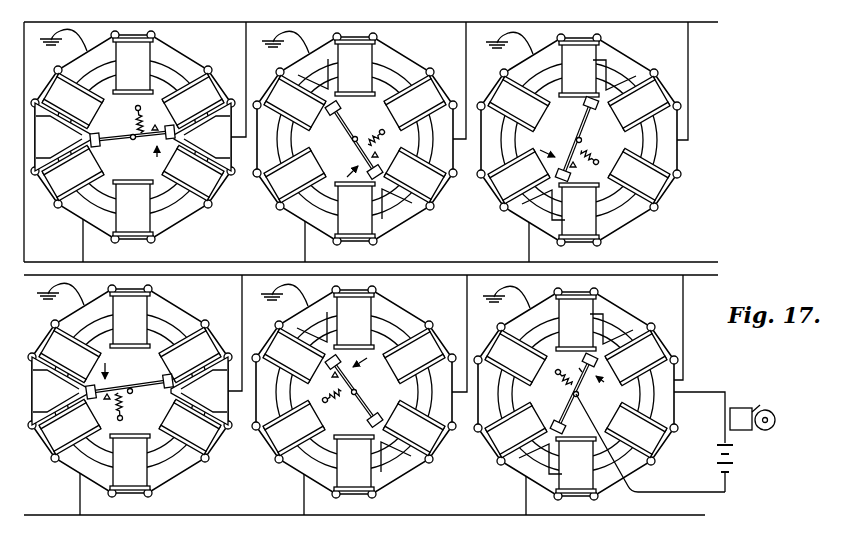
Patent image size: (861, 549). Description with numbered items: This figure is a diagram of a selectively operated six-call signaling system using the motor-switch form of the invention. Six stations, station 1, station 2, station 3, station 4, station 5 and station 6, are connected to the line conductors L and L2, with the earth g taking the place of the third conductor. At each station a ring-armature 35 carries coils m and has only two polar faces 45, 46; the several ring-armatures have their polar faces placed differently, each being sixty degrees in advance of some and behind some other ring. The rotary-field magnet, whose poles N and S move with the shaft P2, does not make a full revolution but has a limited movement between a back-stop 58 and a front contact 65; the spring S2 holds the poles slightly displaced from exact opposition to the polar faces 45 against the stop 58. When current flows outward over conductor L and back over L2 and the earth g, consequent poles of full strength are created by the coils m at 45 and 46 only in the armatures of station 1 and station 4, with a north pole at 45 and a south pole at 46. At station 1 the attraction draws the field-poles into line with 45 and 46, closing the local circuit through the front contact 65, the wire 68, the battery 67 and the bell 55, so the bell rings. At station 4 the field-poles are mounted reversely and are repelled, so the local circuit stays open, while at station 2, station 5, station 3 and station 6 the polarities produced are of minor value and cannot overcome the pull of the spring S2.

The station No. 1 is at (578, 395).
The station No. 2 is at (359, 395).
The station No. 3 is at (135, 395).
The station No. 4 is at (582, 142).
The station No. 5 is at (359, 142).
The station No. 6 is at (138, 142).
The coils m is at (354, 265).
The ring-armature 35 is at (163, 197).
The polar face 45 is at (82, 137).
The polar face 46 is at (385, 193).
The shaft P2 is at (342, 264).
The spring S2 is at (357, 263).
The back-stop 58 is at (582, 370).
The front contact 65 is at (598, 388).
The bell 55 is at (736, 409).
The battery 67 is at (734, 468).
The local circuit wire 68 is at (684, 495).
The earth g is at (285, 175).
The line conductor L is at (371, 380).
The line conductor L2 is at (490, 264).